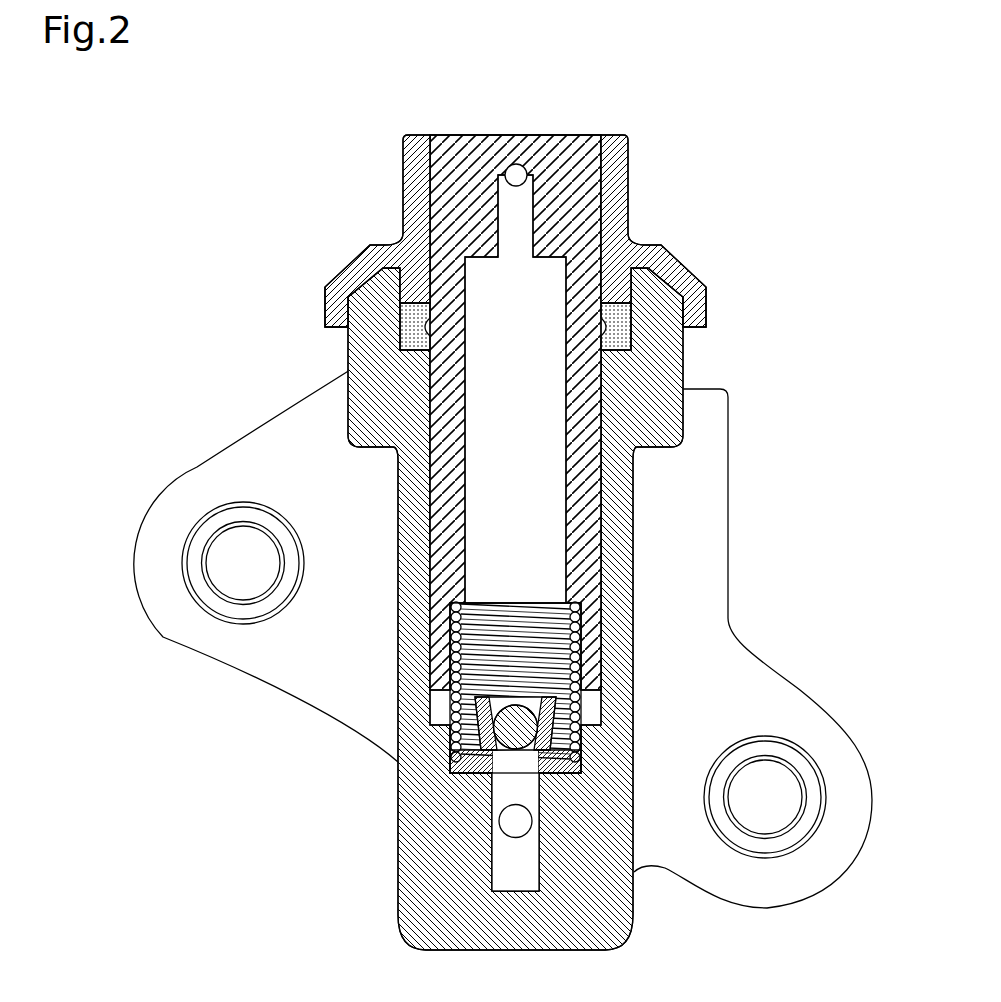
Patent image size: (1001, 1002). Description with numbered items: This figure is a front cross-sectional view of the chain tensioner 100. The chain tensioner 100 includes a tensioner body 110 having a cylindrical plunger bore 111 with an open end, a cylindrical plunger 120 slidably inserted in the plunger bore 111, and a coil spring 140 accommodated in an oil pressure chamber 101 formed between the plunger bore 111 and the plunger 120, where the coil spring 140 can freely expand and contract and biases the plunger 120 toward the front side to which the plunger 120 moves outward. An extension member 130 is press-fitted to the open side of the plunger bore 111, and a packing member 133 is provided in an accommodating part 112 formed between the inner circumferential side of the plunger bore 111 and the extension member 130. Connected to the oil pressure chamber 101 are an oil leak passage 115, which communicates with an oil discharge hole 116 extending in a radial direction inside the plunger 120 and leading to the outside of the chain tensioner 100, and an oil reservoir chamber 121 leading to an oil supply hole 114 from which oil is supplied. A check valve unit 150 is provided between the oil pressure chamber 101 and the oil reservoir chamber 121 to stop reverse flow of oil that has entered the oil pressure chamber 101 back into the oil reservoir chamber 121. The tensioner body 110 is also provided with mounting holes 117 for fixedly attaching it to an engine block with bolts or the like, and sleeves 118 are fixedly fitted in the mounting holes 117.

The chain tensioner 100 is at (267, 61).
The oil pressure chamber 101 is at (520, 422).
The tensioner body 110 is at (353, 437).
The plunger bore 111 is at (437, 712).
The accommodating part 112 is at (422, 342).
The oil supply hole 114 is at (511, 818).
The oil leak passage 115 is at (522, 212).
The oil discharge hole 116 is at (518, 160).
The mounting holes 117 is at (250, 563).
The sleeves 118 is at (277, 533).
The plunger 120 is at (450, 487).
The oil reservoir chamber 121 is at (505, 857).
The extension member 130 is at (407, 220).
The packing member 133 is at (337, 312).
The coil spring 140 is at (448, 650).
The check valve unit 150 is at (482, 727).